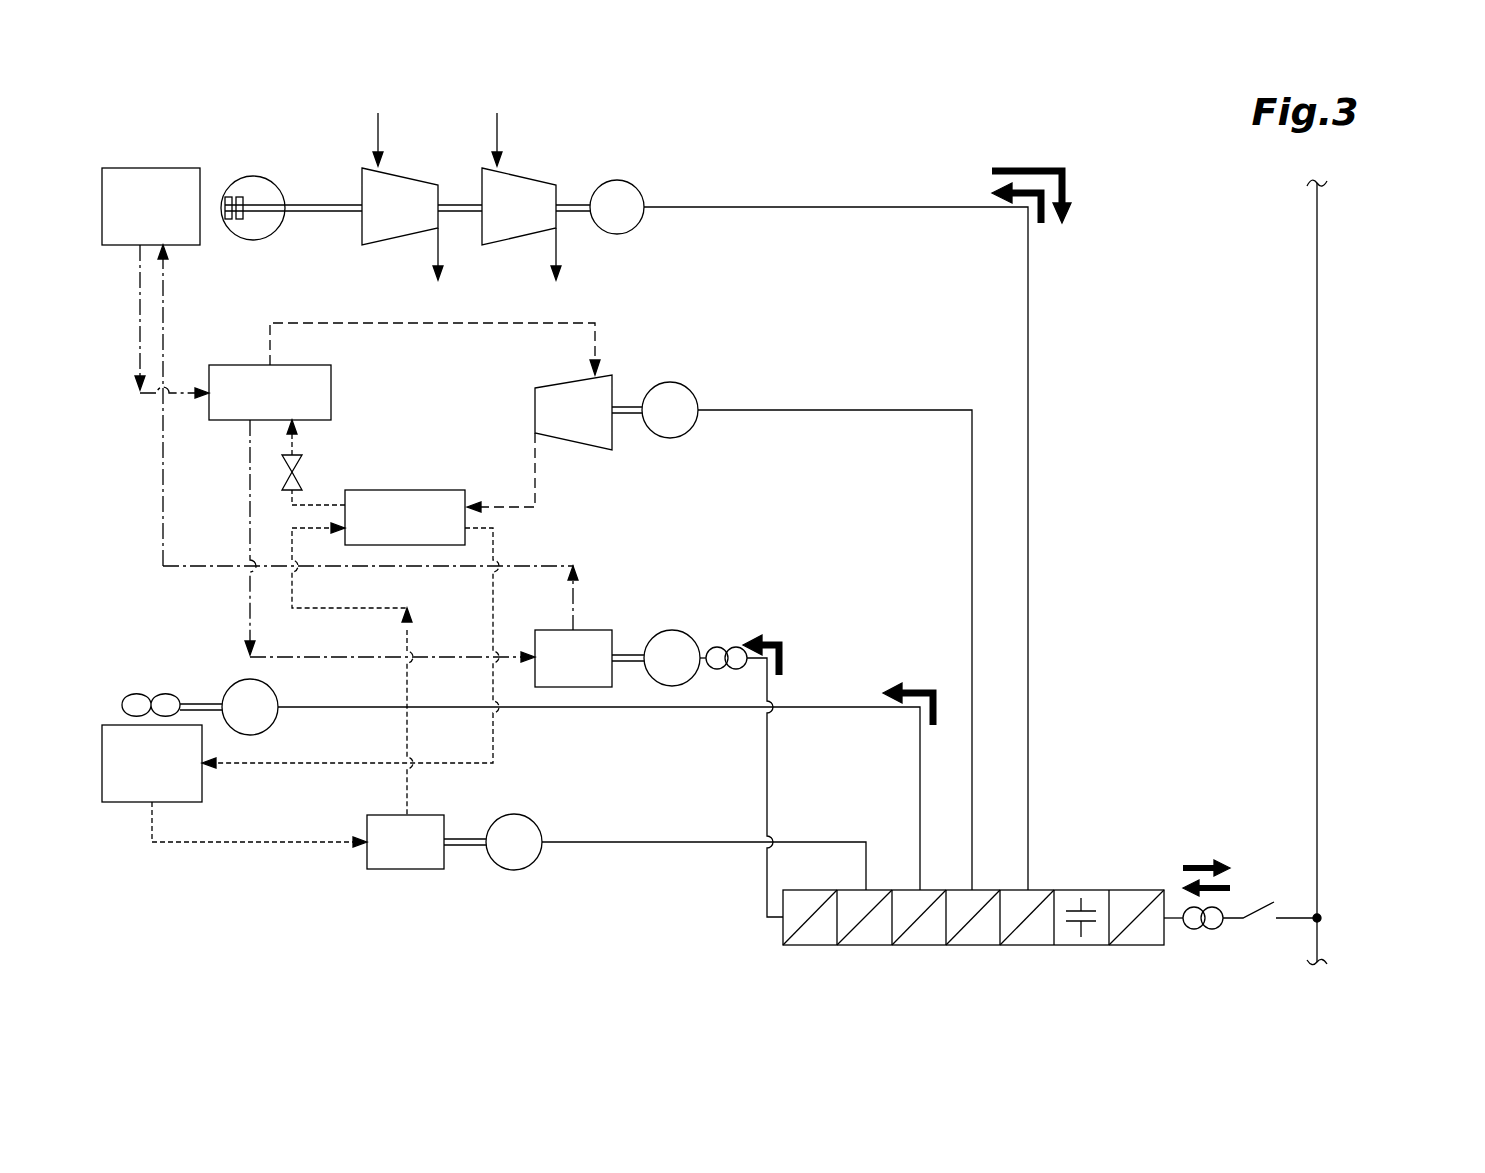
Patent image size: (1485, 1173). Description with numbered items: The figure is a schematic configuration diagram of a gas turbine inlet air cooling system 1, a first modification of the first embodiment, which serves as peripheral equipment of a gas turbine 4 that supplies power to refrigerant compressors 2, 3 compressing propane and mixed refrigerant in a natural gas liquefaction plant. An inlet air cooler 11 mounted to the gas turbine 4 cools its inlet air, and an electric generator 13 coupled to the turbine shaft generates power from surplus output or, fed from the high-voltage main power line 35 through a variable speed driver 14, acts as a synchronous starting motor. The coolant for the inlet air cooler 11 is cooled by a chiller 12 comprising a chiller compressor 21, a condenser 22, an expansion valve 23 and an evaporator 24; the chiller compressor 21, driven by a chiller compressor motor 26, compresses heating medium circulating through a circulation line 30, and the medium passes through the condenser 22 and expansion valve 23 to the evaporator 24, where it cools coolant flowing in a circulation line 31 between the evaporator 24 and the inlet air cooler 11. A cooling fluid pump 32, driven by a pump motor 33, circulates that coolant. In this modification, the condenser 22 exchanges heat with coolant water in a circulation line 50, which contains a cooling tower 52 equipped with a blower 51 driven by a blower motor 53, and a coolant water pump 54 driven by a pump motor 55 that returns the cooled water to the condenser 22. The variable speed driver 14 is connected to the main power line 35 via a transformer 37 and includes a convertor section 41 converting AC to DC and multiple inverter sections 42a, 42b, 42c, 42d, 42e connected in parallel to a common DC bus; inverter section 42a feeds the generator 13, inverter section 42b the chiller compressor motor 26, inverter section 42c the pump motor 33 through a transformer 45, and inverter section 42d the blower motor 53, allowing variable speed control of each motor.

The gas turbine inlet air cooling system 1 is at (915, 132).
The refrigerant compressor 2 is at (410, 170).
The refrigerant compressor 3 is at (538, 172).
The gas turbine 4 is at (263, 177).
The inlet air cooler 11 is at (158, 168).
The chiller 12 is at (662, 318).
The electric generator 13 is at (620, 180).
The variable speed driver 14 is at (991, 876).
The chiller compressor 21 is at (585, 447).
The condenser 22 is at (447, 488).
The expansion valve 23 is at (303, 471).
The evaporator 24 is at (331, 402).
The chiller compressor motor 26 is at (700, 392).
The circulation line 30 is at (535, 323).
The circulation line 31 is at (162, 548).
The cooling fluid pump 32 is at (593, 630).
The pump motor 33 is at (688, 633).
The high-voltage main power line 35 is at (1317, 290).
The transformer 37 is at (1212, 929).
The convertor section 41 is at (1137, 890).
The inverter section 42a is at (1048, 890).
The inverter section 42b is at (995, 890).
The inverter section 42c is at (812, 890).
The inverter section 42d is at (940, 890).
The inverter section 42e is at (886, 890).
The transformer 45 is at (738, 646).
The circulation line 50 is at (225, 846).
The blower 51 is at (150, 693).
The cooling tower 52 is at (113, 802).
The blower motor 53 is at (272, 729).
The coolant water pump 54 is at (423, 869).
The pump motor 55 is at (530, 818).